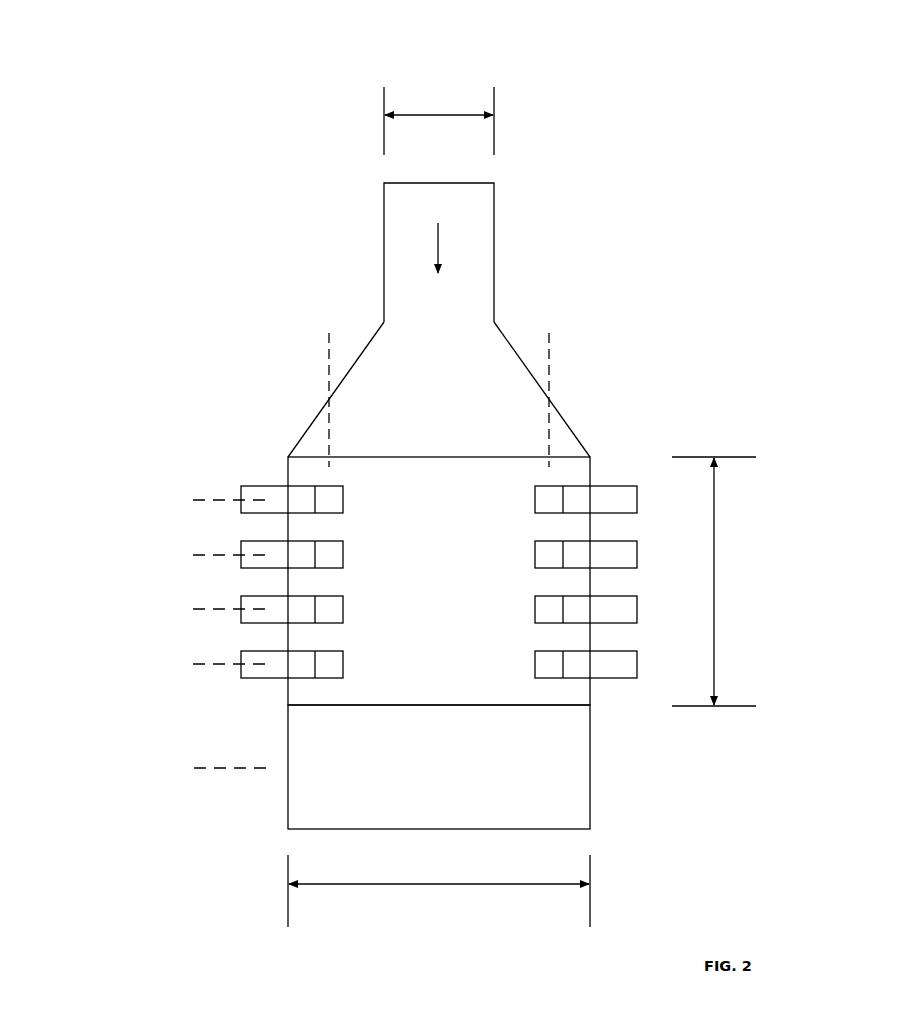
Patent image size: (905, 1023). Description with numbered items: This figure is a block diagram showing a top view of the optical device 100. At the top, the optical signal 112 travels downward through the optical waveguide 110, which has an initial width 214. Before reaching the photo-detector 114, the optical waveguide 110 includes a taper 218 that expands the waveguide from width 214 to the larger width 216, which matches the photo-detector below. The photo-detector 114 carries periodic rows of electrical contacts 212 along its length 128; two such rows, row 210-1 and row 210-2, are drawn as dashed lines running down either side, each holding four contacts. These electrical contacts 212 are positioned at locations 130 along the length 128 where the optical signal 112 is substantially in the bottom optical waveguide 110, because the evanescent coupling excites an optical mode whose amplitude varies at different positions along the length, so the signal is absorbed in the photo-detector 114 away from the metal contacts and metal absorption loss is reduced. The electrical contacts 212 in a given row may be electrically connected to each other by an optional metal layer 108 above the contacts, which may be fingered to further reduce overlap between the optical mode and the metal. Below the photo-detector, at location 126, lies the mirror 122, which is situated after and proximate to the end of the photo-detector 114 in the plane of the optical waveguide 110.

The optical device 100 is at (310, 48).
The optical waveguide 110 is at (495, 237).
The taper 218 is at (427, 393).
The width 214 is at (440, 115).
The optical signal 112 is at (437, 243).
The photo-detector 114 is at (417, 500).
The row 210-1 is at (329, 381).
The row 210-2 is at (549, 381).
The electrical contacts 212 is at (552, 553).
The metal layer 108 is at (302, 558).
The locations 130 is at (233, 499).
The length 128 is at (714, 523).
The mirror 122 is at (348, 834).
The location 126 is at (189, 768).
The width 216 is at (443, 884).